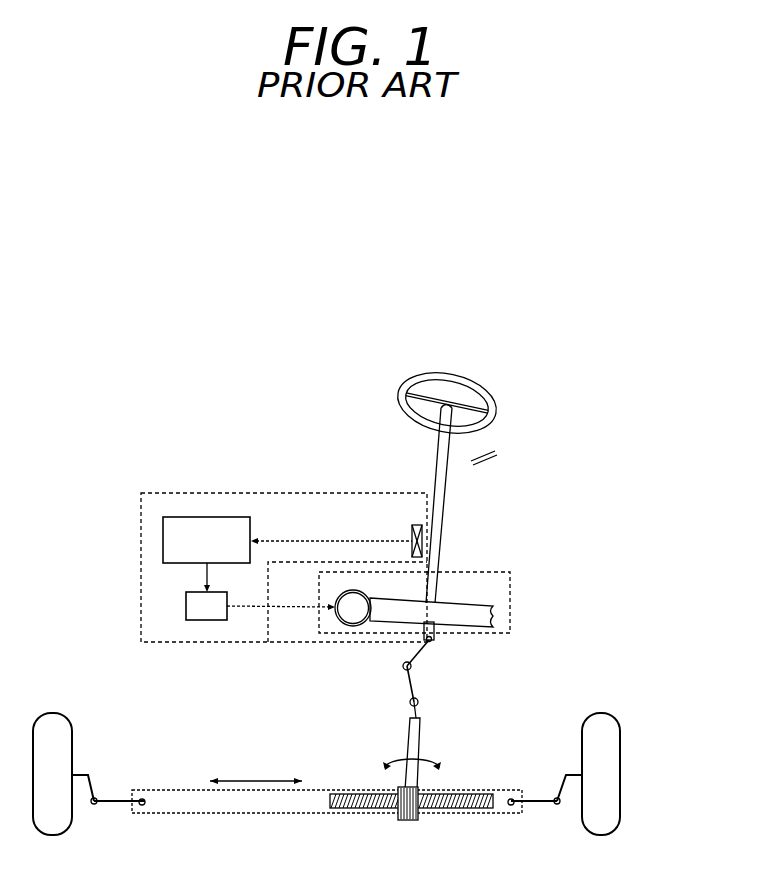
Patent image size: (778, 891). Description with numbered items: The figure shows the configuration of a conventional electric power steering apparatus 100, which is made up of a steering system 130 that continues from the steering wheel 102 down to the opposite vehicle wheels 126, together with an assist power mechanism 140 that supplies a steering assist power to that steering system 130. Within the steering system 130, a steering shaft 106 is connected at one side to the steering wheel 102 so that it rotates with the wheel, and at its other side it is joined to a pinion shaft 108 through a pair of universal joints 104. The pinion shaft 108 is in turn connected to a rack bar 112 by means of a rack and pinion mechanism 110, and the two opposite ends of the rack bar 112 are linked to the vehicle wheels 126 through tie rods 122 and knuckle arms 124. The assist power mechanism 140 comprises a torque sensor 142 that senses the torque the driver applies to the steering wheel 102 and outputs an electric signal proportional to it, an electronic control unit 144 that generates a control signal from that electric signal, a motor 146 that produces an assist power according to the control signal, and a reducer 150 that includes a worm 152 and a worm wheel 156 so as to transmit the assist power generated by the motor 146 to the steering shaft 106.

The electric power steering apparatus 100 is at (183, 327).
The steering wheel 102 is at (398, 393).
The universal joints 104 is at (416, 657).
The steering shaft 106 is at (448, 490).
The pinion shaft 108 is at (406, 742).
The rack and pinion mechanism 110 is at (437, 813).
The rack bar 112 is at (193, 798).
The tie rods 122 is at (544, 798).
The knuckle arms 124 is at (80, 772).
The vehicle wheels 126 is at (608, 723).
The steering system 130 is at (452, 471).
The assist power mechanism 140 is at (141, 530).
The torque sensor 142 is at (412, 535).
The electronic control unit 144 is at (246, 523).
The motor 146 is at (186, 606).
The reducer 150 is at (512, 607).
The worm 152 is at (357, 613).
The worm wheel 156 is at (440, 598).